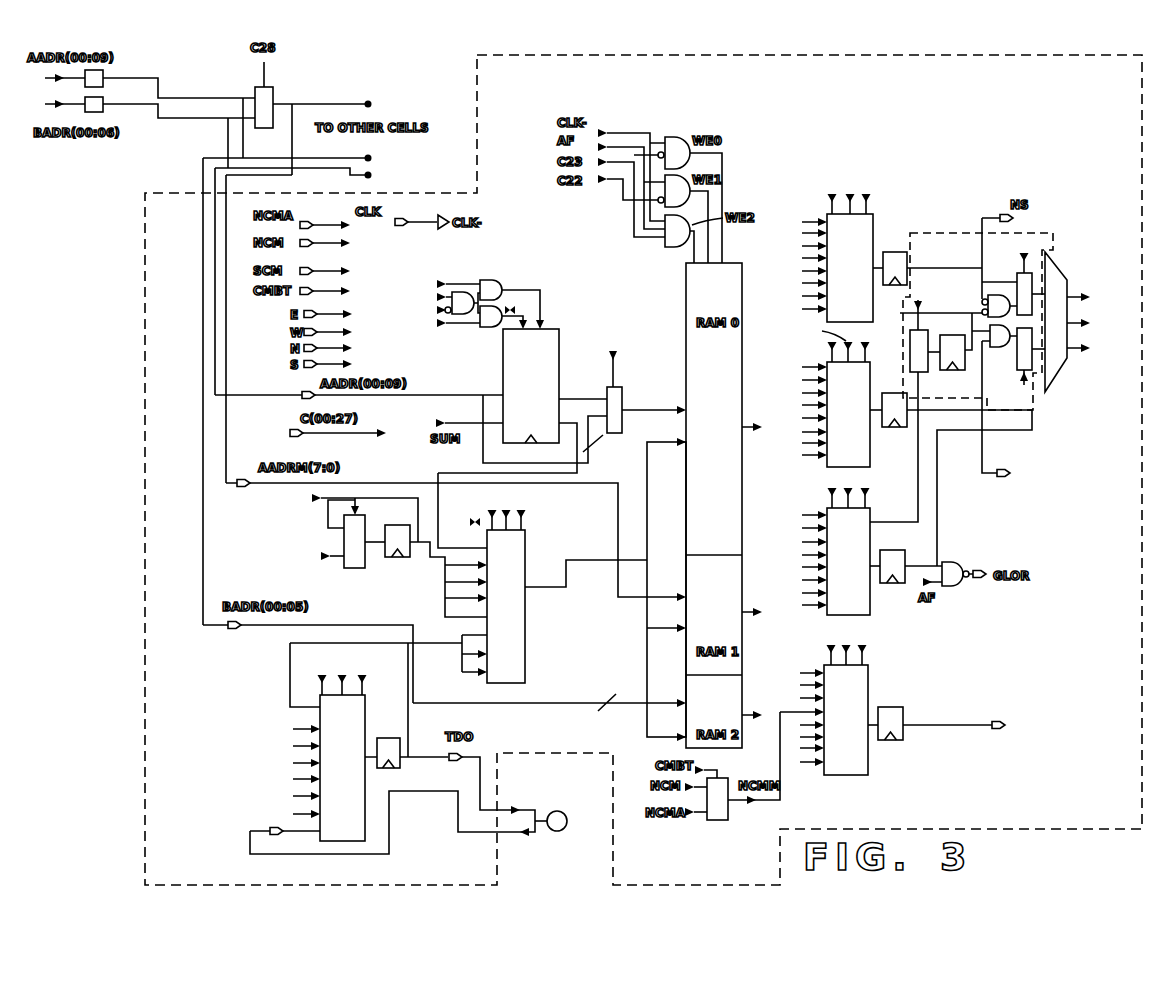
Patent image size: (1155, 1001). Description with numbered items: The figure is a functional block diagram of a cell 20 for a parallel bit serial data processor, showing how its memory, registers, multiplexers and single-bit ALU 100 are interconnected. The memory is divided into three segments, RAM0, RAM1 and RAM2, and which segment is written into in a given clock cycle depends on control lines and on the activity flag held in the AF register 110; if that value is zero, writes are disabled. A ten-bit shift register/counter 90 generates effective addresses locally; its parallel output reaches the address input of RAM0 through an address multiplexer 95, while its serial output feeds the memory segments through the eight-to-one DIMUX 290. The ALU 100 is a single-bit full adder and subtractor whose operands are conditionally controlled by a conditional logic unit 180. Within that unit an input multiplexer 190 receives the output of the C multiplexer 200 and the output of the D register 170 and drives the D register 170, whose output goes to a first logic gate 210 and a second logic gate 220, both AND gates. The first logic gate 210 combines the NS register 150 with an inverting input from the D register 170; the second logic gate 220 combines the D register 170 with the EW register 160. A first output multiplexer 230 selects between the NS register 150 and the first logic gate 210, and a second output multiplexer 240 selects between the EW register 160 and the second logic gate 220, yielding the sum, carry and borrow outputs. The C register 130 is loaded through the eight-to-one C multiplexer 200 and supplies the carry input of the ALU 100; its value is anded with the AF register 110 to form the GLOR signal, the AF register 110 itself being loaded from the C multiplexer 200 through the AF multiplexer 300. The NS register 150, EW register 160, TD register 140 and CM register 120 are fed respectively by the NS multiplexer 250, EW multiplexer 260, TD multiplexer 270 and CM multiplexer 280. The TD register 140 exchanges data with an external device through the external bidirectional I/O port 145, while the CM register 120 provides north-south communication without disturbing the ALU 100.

The cell 20 is at (118, 546).
The shift register/counter 90 is at (546, 346).
The address multiplexer 95 is at (621, 389).
The ALU 100 is at (1067, 356).
The AF register 110 is at (398, 558).
The CM register 120 is at (897, 741).
The C register 130 is at (898, 584).
The TD register 140 is at (396, 769).
The external bidirectional I/O port 145 is at (556, 832).
The NS register 150 is at (898, 251).
The EW register 160 is at (888, 428).
The D register 170 is at (951, 371).
The conditional logic unit 180 is at (930, 235).
The input multiplexer 190 is at (920, 373).
The C multiplexer 200 is at (849, 542).
The first logic gate 210 is at (984, 300).
The second logic gate 220 is at (999, 346).
The first output multiplexer 230 is at (1004, 281).
The second output multiplexer 240 is at (1033, 373).
The NS multiplexer 250 is at (849, 245).
The EW multiplexer 260 is at (848, 394).
The TD multiplexer 270 is at (320, 749).
The CM multiplexer 280 is at (837, 700).
The DIMUX 290 is at (500, 586).
The AF multiplexer 300 is at (344, 539).